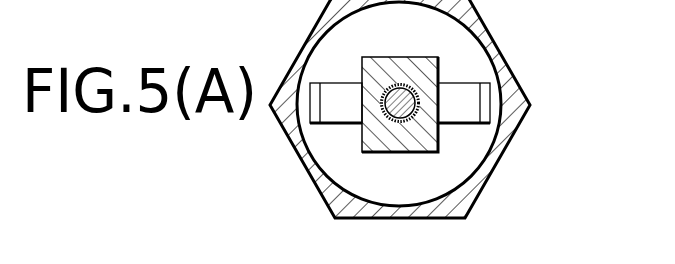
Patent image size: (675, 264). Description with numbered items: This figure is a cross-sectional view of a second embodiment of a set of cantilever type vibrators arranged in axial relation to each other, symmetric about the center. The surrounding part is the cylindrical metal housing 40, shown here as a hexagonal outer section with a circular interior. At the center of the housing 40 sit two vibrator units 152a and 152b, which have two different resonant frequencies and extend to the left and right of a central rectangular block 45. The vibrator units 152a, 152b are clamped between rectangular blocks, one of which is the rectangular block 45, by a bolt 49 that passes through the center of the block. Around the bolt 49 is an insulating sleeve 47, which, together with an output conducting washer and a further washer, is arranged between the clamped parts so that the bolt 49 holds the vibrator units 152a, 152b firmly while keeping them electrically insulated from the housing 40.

The cylindrical metal housing 40 is at (508, 130).
The rectangular block 45 is at (430, 72).
The insulating sleeve 47 is at (398, 85).
The bolt 49 is at (400, 108).
The vibrator unit 152a is at (328, 130).
The vibrator unit 152b is at (493, 100).